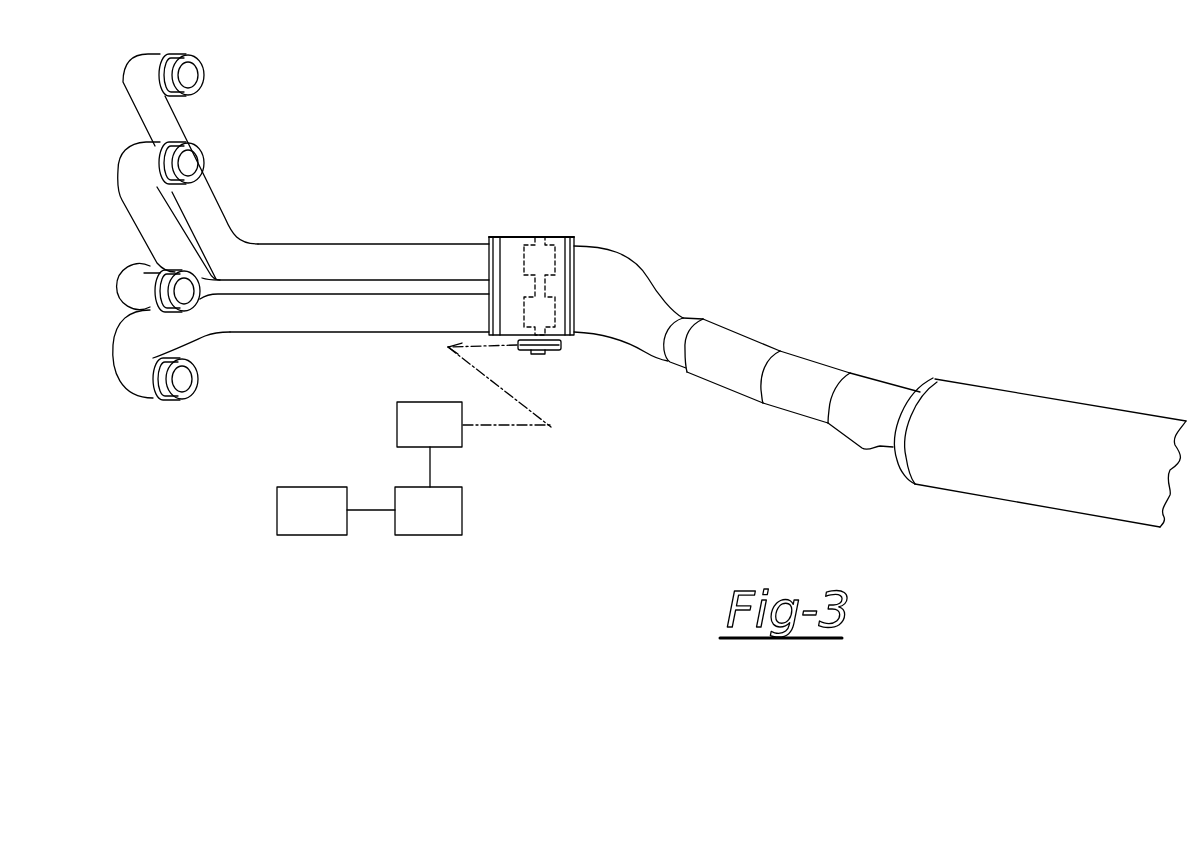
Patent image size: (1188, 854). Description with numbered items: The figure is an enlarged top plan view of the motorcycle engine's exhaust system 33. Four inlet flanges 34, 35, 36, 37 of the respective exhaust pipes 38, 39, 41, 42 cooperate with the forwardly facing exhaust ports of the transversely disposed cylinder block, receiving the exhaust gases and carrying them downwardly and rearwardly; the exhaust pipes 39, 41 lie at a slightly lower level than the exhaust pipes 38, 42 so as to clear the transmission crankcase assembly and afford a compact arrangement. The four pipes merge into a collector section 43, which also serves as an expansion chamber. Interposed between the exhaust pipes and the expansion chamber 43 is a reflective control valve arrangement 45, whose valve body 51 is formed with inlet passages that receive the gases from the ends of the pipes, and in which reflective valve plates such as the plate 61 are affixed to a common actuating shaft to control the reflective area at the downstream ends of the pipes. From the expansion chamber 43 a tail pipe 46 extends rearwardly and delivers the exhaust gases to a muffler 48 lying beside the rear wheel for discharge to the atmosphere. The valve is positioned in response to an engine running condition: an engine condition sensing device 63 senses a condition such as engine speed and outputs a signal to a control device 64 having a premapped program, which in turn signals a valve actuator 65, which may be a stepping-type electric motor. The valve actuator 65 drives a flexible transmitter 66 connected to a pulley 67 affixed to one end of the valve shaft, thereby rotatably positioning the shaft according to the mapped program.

The exhaust system 33 is at (328, 232).
The inlet flange 34 is at (194, 308).
The inlet flange 35 is at (204, 154).
The inlet flange 36 is at (197, 398).
The inlet flange 37 is at (205, 73).
The exhaust pipe 38 is at (142, 398).
The exhaust pipe 39 is at (121, 302).
The exhaust pipe 41 is at (132, 212).
The exhaust pipe 42 is at (133, 113).
The collector section 43 is at (638, 263).
The reflective control valve arrangement 45 is at (570, 233).
The tail pipe 46 is at (693, 319).
The muffler 48 is at (1103, 404).
The valve body 51 is at (508, 236).
The reflective valve plate 61 is at (531, 235).
The engine condition sensing device 63 is at (312, 487).
The control device 64 is at (462, 516).
The valve actuator 65 is at (397, 420).
The flexible transmitter 66 is at (507, 429).
The pulley 67 is at (553, 351).